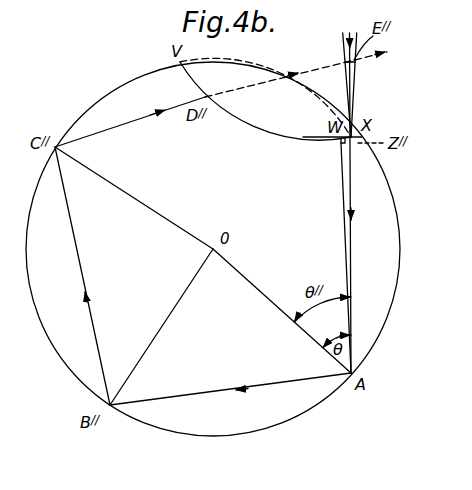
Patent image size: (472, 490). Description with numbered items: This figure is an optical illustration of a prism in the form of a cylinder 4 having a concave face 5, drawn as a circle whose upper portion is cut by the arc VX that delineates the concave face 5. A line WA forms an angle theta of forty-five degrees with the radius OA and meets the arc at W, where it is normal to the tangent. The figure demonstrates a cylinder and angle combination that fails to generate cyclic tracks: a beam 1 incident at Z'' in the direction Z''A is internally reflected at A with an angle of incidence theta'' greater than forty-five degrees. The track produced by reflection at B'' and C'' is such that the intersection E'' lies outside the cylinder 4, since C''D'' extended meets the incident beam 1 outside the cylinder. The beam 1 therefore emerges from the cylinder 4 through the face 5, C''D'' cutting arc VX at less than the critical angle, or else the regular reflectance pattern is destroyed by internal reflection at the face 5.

The beam 1 is at (352, 88).
The cylinder 4 is at (391, 225).
The concave face 5 is at (238, 61).